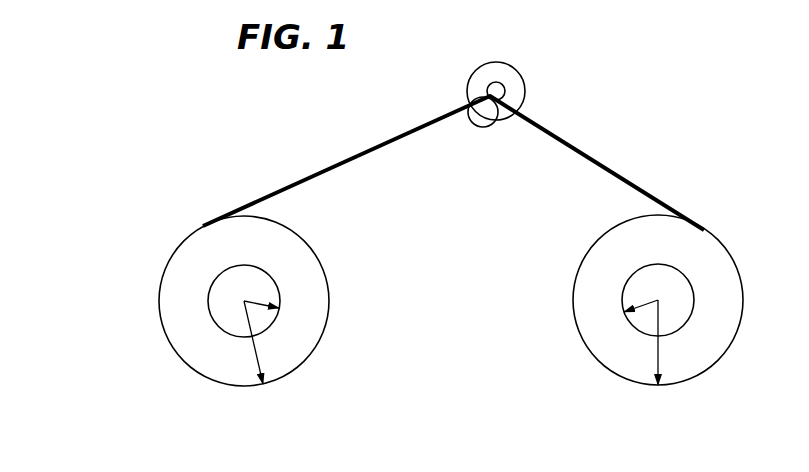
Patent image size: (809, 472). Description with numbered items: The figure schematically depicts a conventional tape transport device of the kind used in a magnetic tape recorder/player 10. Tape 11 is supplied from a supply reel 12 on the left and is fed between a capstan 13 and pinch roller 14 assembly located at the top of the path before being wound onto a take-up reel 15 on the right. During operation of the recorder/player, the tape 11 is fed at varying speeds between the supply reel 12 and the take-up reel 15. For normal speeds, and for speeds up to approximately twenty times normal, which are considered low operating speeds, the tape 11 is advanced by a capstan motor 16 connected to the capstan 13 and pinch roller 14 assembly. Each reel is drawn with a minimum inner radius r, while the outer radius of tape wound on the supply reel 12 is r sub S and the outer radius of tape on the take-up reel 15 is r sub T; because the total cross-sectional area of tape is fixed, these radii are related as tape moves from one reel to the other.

The magnetic tape recorder/player 10 is at (186, 175).
The tape 11 is at (597, 158).
The supply reel 12 is at (182, 363).
The capstan 13 is at (489, 85).
The pinch roller 14 is at (484, 127).
The take-up reel 15 is at (743, 292).
The capstan motor 16 is at (520, 70).